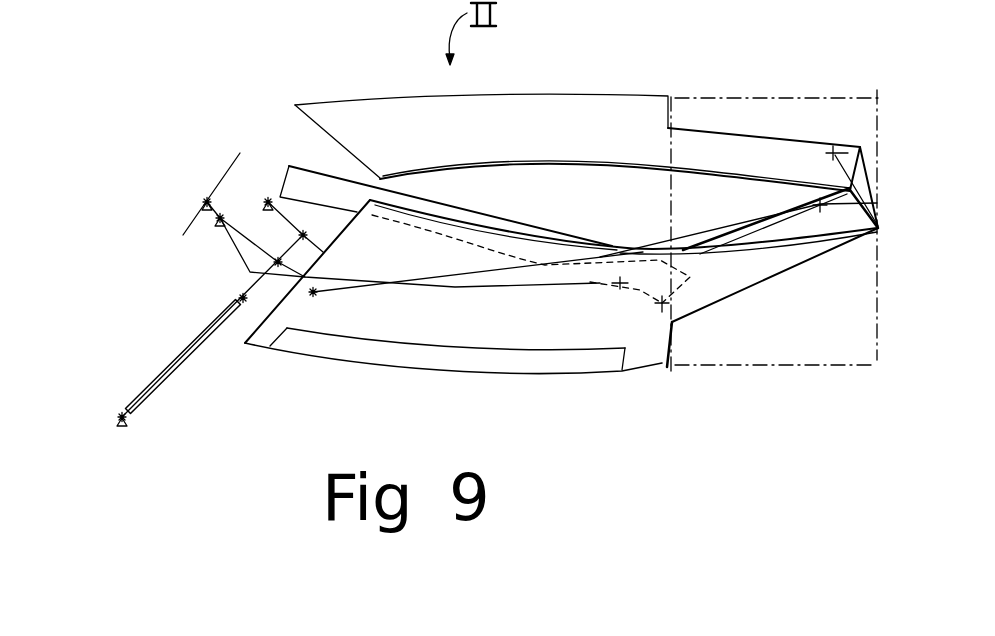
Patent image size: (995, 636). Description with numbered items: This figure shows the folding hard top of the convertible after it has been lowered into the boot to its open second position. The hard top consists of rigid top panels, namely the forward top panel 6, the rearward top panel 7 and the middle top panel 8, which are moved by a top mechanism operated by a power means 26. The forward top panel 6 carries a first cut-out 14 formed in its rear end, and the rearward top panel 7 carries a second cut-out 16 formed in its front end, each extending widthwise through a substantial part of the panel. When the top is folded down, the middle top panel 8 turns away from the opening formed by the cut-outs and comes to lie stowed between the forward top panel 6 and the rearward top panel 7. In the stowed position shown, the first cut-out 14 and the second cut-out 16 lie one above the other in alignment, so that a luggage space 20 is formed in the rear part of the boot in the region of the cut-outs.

The forward top panel 6 is at (582, 112).
The rearward top panel 7 is at (558, 340).
The middle top panel 8 is at (507, 222).
The first cut-out 14 is at (750, 162).
The second cut-out 16 is at (768, 256).
The luggage space 20 is at (770, 327).
The power means 26 is at (192, 353).